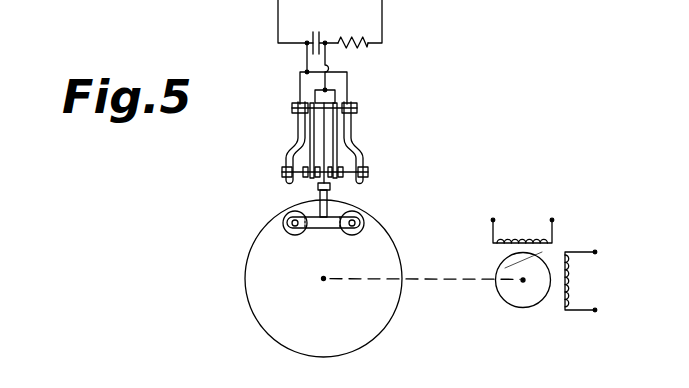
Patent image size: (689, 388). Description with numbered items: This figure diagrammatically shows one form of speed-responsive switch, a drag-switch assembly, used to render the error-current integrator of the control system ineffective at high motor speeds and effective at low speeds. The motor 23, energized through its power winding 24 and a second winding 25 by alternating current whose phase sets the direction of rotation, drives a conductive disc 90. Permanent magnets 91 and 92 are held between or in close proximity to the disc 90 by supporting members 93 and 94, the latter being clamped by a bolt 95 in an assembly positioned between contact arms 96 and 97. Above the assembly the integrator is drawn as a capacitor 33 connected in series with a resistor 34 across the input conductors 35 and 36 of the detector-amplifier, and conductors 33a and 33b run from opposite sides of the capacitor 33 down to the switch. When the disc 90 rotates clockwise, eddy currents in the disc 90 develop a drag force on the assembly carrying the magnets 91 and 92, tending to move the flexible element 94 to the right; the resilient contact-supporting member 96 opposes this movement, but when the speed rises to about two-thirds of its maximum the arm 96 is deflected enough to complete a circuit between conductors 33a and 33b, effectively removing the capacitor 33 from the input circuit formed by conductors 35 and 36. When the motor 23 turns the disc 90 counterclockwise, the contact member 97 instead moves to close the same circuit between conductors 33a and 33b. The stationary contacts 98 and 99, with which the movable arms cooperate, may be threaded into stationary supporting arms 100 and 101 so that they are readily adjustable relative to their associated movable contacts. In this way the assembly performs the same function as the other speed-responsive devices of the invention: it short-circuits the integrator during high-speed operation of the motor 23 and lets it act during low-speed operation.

The motor 23 is at (525, 308).
The power winding 24 is at (573, 297).
The field coil 25 is at (516, 236).
The capacitor 33 is at (314, 30).
The conductor 33a is at (303, 59).
The conductor 33b is at (329, 59).
The resistor 34 is at (345, 40).
The input conductor 35 is at (275, 29).
The input conductor 36 is at (384, 28).
The conductive disc 90 is at (260, 325).
The permanent magnet 91 is at (283, 225).
The permanent magnet 92 is at (364, 225).
The supporting member 93 is at (324, 218).
The supporting member 94 is at (310, 139).
The bolt 95 is at (358, 110).
The contact arm 96 is at (337, 152).
The contact arm 97 is at (322, 153).
The stationary contact 98 is at (282, 177).
The stationary contact 99 is at (366, 177).
The stationary supporting arm 100 is at (301, 128).
The stationary supporting arm 101 is at (349, 128).